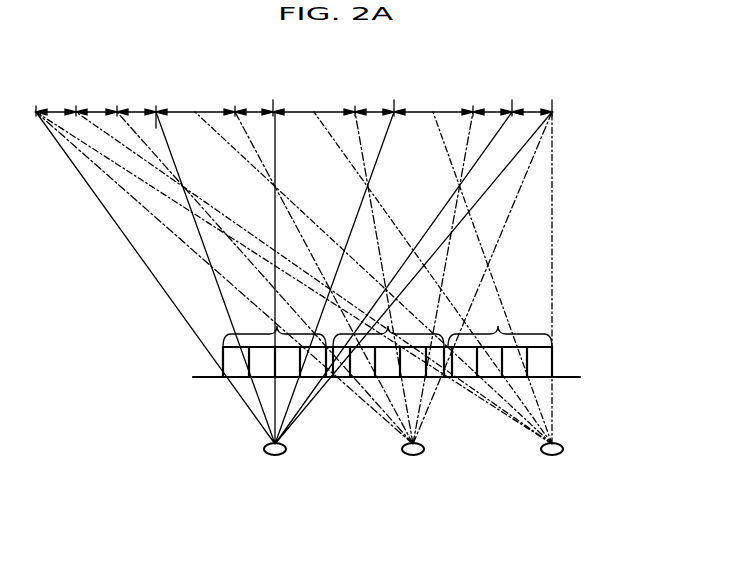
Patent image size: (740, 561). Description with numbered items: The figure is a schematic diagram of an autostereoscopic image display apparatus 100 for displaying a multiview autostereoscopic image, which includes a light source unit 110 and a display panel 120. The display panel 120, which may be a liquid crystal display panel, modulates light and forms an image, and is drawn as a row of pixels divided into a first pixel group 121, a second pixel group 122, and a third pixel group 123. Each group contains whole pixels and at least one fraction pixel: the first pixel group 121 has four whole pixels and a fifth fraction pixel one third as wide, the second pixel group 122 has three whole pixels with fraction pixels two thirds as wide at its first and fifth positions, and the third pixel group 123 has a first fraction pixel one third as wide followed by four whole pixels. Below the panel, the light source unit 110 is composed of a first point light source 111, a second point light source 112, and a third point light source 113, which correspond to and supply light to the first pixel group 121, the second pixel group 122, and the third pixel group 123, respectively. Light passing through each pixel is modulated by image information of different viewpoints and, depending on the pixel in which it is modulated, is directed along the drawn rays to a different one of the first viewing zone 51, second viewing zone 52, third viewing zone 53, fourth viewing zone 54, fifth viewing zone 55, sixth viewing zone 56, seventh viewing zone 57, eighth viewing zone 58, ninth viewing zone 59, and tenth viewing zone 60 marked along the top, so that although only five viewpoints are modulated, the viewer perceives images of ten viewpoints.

The first viewing zone 51 is at (57, 108).
The second viewing zone 52 is at (96, 108).
The third viewing zone 53 is at (136, 108).
The fourth viewing zone 54 is at (185, 108).
The fifth viewing zone 55 is at (255, 108).
The sixth viewing zone 56 is at (303, 108).
The seventh viewing zone 57 is at (375, 108).
The eighth viewing zone 58 is at (421, 108).
The ninth viewing zone 59 is at (493, 108).
The tenth viewing zone 60 is at (533, 108).
The autostereoscopic image display apparatus 100 is at (580, 137).
The light source unit 110 is at (413, 493).
The first point light source 111 is at (274, 455).
The second point light source 112 is at (413, 455).
The third point light source 113 is at (552, 474).
The display panel 120 is at (374, 319).
The first pixel group 121 is at (277, 326).
The second pixel group 122 is at (388, 326).
The third pixel group 123 is at (498, 326).